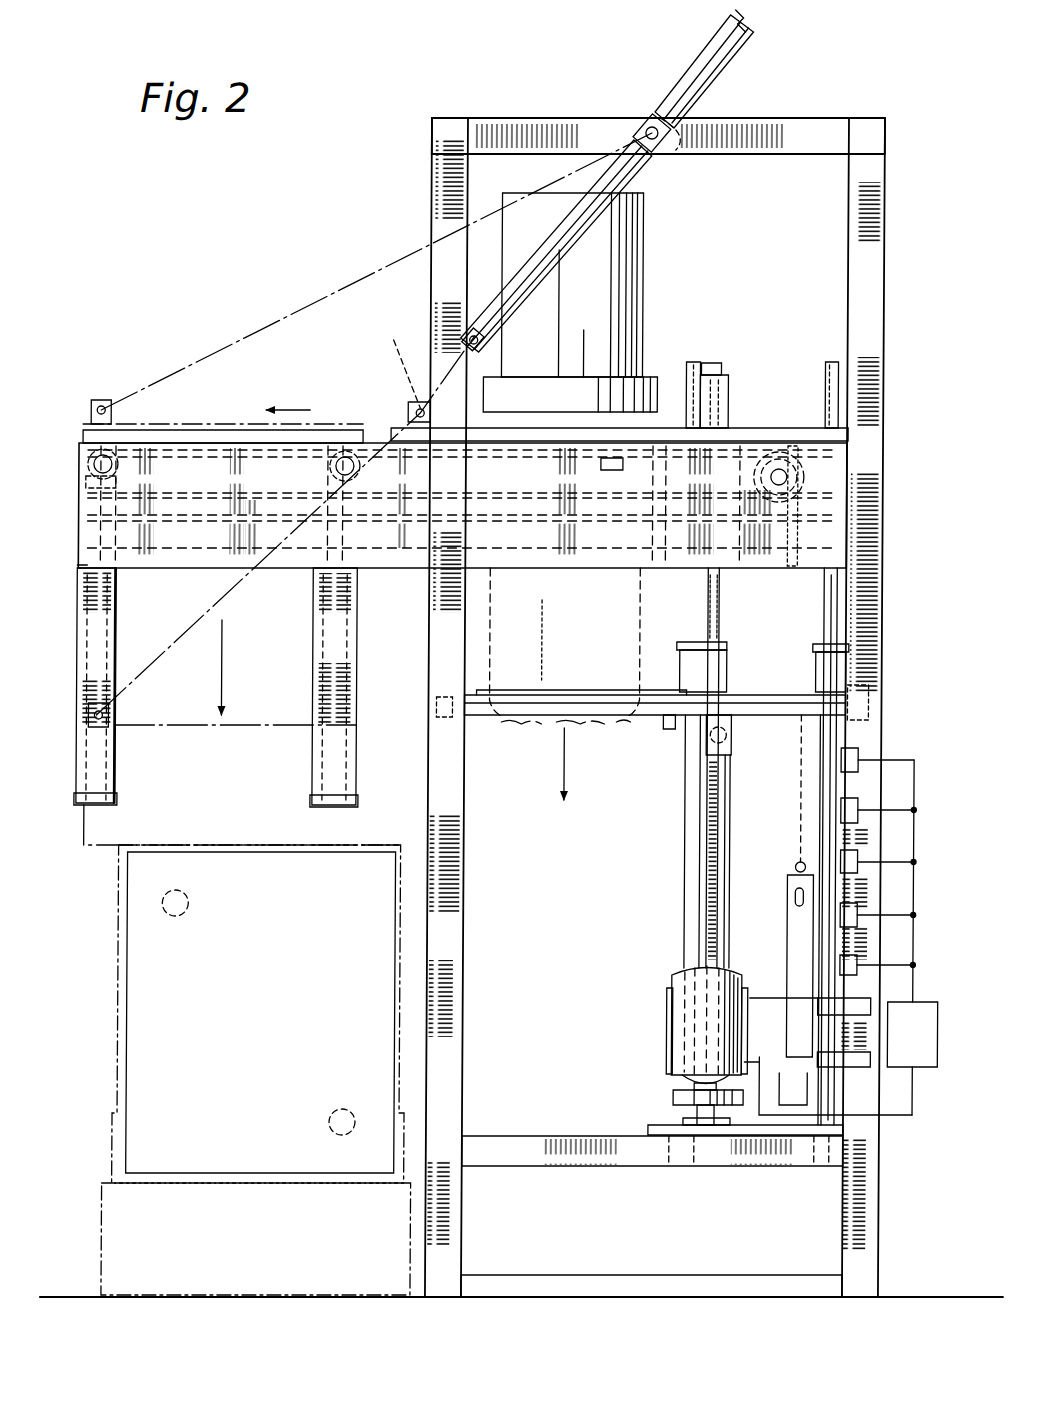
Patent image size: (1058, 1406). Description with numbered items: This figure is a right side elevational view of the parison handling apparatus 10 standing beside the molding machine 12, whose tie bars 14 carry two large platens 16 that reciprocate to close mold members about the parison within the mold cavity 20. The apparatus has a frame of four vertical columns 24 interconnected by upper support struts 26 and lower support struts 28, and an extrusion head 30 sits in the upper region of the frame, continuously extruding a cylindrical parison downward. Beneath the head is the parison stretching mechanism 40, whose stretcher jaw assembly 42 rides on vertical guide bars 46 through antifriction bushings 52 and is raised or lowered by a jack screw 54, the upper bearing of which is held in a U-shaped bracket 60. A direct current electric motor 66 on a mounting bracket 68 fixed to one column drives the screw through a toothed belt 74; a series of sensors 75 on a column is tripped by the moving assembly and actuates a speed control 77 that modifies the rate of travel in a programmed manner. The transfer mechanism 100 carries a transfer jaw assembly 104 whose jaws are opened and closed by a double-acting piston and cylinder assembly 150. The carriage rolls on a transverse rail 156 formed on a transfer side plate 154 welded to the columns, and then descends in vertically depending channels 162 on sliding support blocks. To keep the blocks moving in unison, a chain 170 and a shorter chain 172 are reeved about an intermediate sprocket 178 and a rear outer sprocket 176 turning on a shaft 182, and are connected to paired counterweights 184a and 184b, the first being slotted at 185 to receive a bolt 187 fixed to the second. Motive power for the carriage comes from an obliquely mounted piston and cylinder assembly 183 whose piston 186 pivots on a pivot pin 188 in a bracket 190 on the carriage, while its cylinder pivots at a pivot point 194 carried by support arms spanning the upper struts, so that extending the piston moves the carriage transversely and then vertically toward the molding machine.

The apparatus 10 is at (265, 285).
The molding machine 12 is at (112, 1075).
The tie bars 14 is at (190, 912).
The platens 16 is at (127, 990).
The mold cavity 20 is at (495, 92).
The columns 24 is at (440, 160).
The upper support struts 26 is at (795, 118).
The lower support struts 28 is at (655, 1272).
The extrusion head 30 is at (645, 268).
The parison stretching mechanism 40 is at (672, 798).
The stretcher jaw assembly 42 is at (489, 720).
The guide bars 46 is at (686, 362).
The antifriction bushings 52 is at (845, 668).
The jack screw 54 is at (722, 622).
The U-shaped bracket 60 is at (730, 392).
The electric motor 66 is at (680, 1035).
The mounting bracket 68 is at (716, 368).
The toothed belt 74 is at (95, 463).
The sensors 75 is at (862, 755).
The speed control 77 is at (930, 1085).
The transfer mechanism 100 is at (240, 412).
The transfer jaw assembly 104 is at (606, 520).
The piston and cylinder assembly 150 is at (490, 472).
The transfer side plate 154 is at (178, 585).
The transverse rail 156 is at (152, 468).
The vertical channels 162 is at (318, 660).
The chain 170 is at (186, 440).
The shorter chain 172 is at (600, 466).
The rear outer sprocket 176 is at (781, 520).
The intermediate sprocket 178 is at (335, 466).
The shaft 182 is at (781, 452).
The piston and cylinder assembly 183 is at (700, 50).
The counterweight 184a is at (790, 1036).
The counterweight 184b is at (793, 927).
The slot 185 is at (795, 897).
The piston 186 is at (445, 348).
The bolt 187 is at (790, 888).
The pivot pin 188 is at (95, 410).
The bracket 190 is at (103, 405).
The pivot point 194 is at (667, 140).